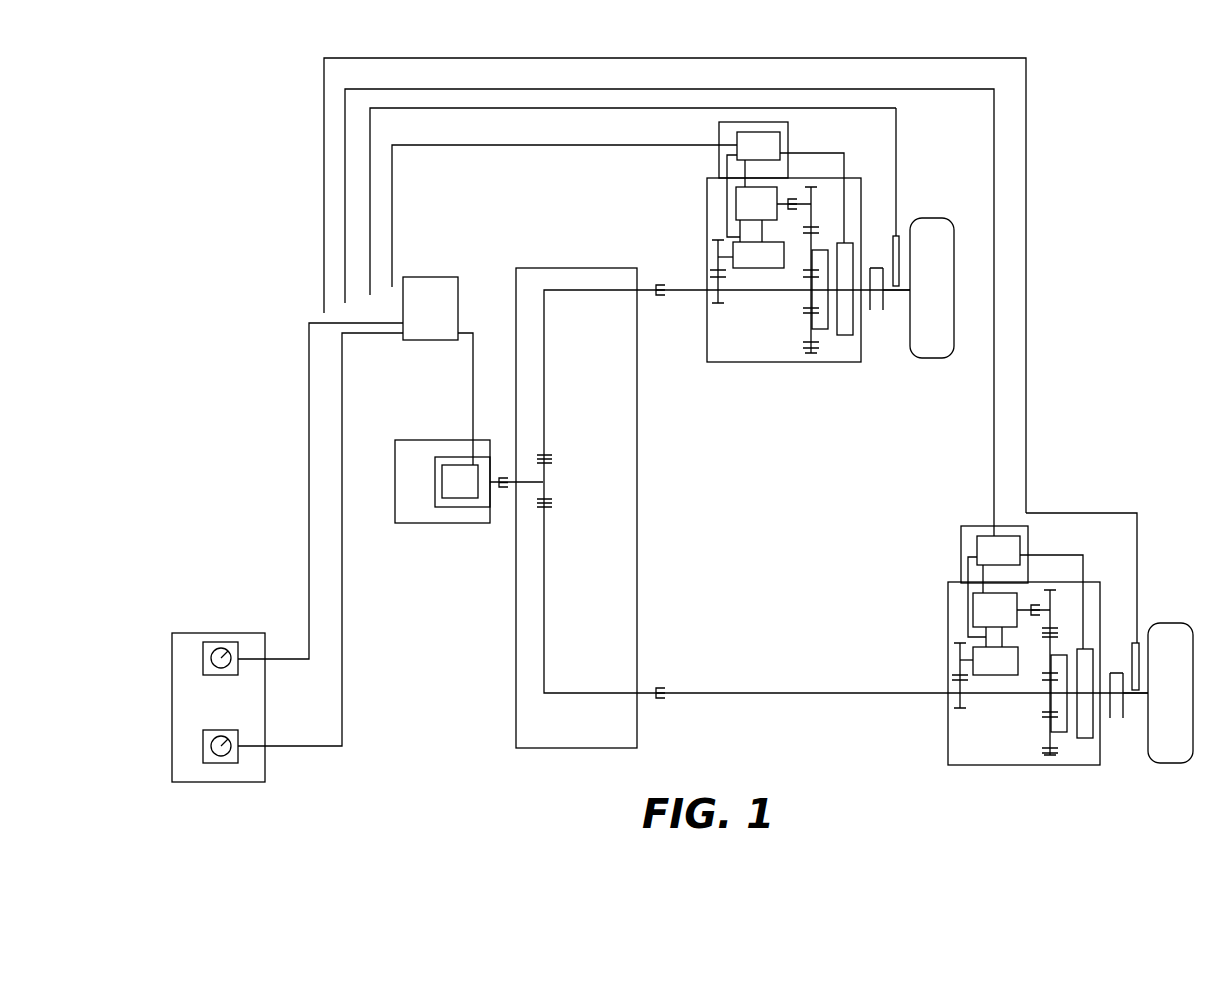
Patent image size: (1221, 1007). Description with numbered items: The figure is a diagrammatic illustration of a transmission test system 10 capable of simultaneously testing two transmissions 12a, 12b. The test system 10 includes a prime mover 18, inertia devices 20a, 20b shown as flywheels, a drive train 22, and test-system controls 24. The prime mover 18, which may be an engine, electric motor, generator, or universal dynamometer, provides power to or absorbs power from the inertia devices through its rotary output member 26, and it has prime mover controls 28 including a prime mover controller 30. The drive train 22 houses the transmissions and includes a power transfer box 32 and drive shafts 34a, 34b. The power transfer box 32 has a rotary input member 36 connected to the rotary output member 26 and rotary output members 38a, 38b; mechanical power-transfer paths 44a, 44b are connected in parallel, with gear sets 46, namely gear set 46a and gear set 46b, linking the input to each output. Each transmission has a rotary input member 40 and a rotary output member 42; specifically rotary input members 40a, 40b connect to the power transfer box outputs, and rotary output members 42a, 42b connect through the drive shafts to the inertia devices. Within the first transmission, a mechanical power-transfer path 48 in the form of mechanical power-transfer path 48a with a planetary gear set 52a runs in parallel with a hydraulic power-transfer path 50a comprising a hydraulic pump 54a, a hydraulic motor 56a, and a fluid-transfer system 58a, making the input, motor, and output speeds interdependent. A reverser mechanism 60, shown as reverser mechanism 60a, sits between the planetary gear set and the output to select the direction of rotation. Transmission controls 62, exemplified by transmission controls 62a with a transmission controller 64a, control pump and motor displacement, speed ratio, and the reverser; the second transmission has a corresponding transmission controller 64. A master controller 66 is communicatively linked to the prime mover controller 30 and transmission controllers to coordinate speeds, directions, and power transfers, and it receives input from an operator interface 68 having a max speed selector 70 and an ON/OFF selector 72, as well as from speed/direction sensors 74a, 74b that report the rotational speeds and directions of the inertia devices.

The transmission test system 10 is at (262, 83).
The transmission 12a is at (833, 365).
The transmission 12b is at (1072, 768).
The prime mover 18 is at (412, 524).
The inertia device 20a is at (915, 299).
The inertia device 20b is at (1153, 704).
The drive train 22 is at (482, 656).
The test-system controls 24 is at (743, 117).
The rotary output member 26 is at (500, 490).
The prime mover controls 28 is at (481, 508).
The prime mover controller 30 is at (448, 494).
The power transfer box 32 is at (545, 750).
The drive shaft 34a is at (900, 292).
The drive shaft 34b is at (1130, 703).
The rotary input member 36 is at (508, 478).
The rotary output member 38a is at (652, 285).
The rotary output member 38b is at (645, 690).
The rotary input member 40 is at (892, 536).
The rotary input member 40a is at (700, 295).
The rotary input member 40b is at (940, 697).
The rotary output member 42 is at (999, 490).
The rotary output member 42a is at (884, 310).
The rotary output member 42b is at (1107, 713).
The mechanical power-transfer path 44a is at (550, 343).
The mechanical power-transfer path 44b is at (572, 652).
The gear sets 46 is at (493, 453).
The gear set 46a is at (534, 428).
The gear set 46b is at (537, 518).
The mechanical power-transfer path 48 is at (879, 525).
The mechanical power-transfer path 48a is at (792, 310).
The hydraulic power-transfer path 50a is at (720, 206).
The planetary gear set 52a is at (810, 358).
The hydraulic pump 54a is at (775, 266).
The hydraulic motor 56a is at (773, 214).
The fluid-transfer system 58a is at (772, 234).
The reverser mechanism 60 is at (982, 432).
The reverser mechanism 60a is at (852, 248).
The transmission controls 62 is at (792, 135).
The transmission controls 62a is at (778, 122).
The transmission controller 64 is at (760, 130).
The transmission controller 64a is at (775, 157).
The master controller 66 is at (418, 319).
The operator interface 68 is at (268, 763).
The max speed selector 70 is at (203, 660).
The ON/OFF selector 72 is at (203, 746).
The speed/direction sensor 74a is at (888, 236).
The speed/direction sensor 74b is at (1124, 647).